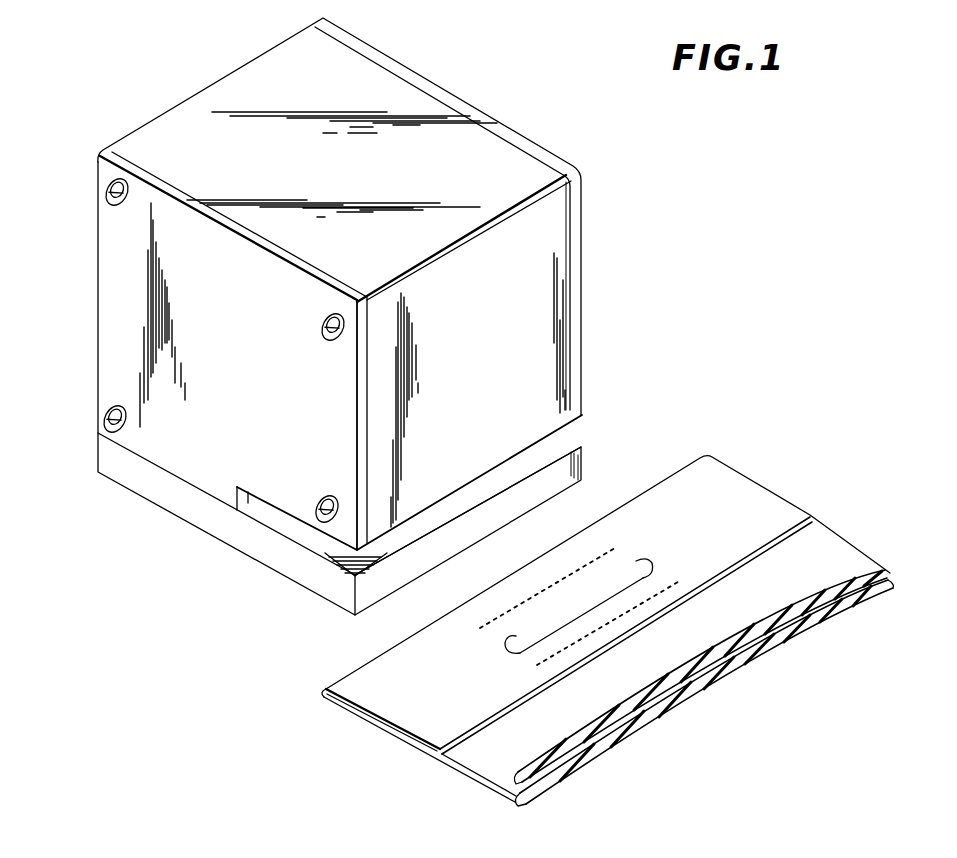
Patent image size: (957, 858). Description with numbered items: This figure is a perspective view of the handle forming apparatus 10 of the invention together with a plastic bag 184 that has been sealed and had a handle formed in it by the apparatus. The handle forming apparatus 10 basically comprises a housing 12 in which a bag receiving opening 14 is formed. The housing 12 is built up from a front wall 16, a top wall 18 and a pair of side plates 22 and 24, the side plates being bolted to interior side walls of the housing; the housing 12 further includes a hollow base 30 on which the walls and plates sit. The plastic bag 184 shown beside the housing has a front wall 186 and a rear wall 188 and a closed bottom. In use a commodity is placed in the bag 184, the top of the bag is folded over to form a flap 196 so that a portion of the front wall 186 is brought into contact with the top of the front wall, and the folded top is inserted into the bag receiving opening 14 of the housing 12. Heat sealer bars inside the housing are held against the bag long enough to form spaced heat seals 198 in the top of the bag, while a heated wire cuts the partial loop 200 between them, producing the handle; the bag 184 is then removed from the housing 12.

The handle forming apparatus 10 is at (362, 284).
The housing 12 is at (508, 122).
The bag receiving opening 14 is at (557, 446).
The front wall 16 is at (473, 438).
The top wall 18 is at (341, 184).
The side plate 22 is at (249, 418).
The side plate 24 is at (576, 320).
The hollow base 30 is at (364, 518).
The plastic bag 184 is at (608, 637).
The front wall 186 is at (515, 793).
The rear wall 188 is at (553, 793).
The flap 196 is at (433, 730).
The heat seals 198 is at (683, 582).
The partial loop 200 is at (518, 650).